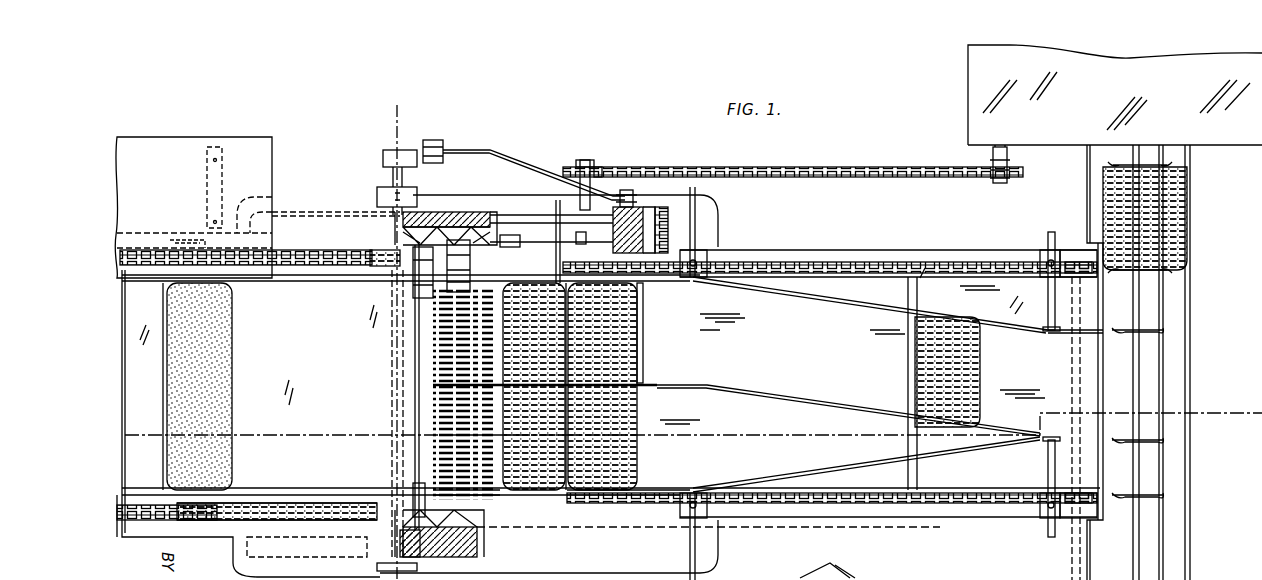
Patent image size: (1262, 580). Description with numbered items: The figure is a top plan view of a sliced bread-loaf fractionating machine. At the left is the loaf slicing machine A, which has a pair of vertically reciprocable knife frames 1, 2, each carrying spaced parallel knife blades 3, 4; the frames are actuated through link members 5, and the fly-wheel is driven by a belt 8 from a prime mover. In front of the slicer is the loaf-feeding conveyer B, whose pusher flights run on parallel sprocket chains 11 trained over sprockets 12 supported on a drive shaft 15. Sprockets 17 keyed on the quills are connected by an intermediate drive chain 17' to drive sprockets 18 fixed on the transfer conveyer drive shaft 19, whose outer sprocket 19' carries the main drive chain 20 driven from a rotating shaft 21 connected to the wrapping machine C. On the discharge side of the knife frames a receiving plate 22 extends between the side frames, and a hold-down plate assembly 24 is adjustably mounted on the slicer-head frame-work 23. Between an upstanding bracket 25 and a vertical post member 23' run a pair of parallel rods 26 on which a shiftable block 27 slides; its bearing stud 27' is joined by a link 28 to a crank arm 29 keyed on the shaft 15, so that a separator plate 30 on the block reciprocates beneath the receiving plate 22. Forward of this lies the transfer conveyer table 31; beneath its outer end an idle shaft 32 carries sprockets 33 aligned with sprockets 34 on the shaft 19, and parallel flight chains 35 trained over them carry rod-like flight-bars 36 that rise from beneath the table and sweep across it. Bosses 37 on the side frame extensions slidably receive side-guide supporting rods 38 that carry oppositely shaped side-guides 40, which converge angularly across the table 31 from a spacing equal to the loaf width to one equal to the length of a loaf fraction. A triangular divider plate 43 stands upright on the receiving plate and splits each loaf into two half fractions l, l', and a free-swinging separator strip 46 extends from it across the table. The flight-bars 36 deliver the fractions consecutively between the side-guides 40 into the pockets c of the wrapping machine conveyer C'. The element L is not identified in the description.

The knife frame 1 is at (395, 290).
The knife frame 2 is at (470, 266).
The knife blades 3 is at (433, 312).
The knife blades 4 is at (433, 334).
The link members 5 is at (1249, 421).
The belt 8 is at (390, 117).
The sprocket chains 11 is at (292, 286).
The sprockets 12 is at (377, 281).
The drive shaft 15 is at (405, 174).
The sprockets 17 is at (369, 250).
The intermediate drive chain 17' is at (507, 209).
The drive sprockets 18 is at (580, 238).
The transfer conveyer drive shaft 19 is at (582, 168).
The sprocket 19' is at (612, 160).
The main drive chain 20 is at (835, 168).
The rotating shaft 21 is at (1008, 156).
The receiving plate 22 is at (485, 480).
The slicer-head frame-work 23 is at (446, 365).
The vertical post member 23' is at (853, 563).
The hold-down plate assembly 24 is at (652, 206).
The upstanding bracket 25 is at (655, 235).
The parallel rods 26 is at (556, 215).
The shiftable block 27 is at (628, 230).
The bearing stud 27' is at (646, 170).
The link 28 is at (520, 152).
The crank arm 29 is at (422, 150).
The separator plate 30 is at (640, 322).
The transfer conveyer table 31 is at (818, 356).
The idle shaft 32 is at (1072, 366).
The sprockets 33 is at (1078, 260).
The sprockets 34 is at (600, 505).
The flight chains 35 is at (802, 262).
The flight-bars 36 is at (908, 356).
The bosses 37 is at (710, 262).
The side-guide supporting rods 38 is at (700, 226).
The side-guides 40 is at (830, 318).
The divider plate 43 is at (433, 388).
The separator strip 46 is at (890, 412).
The loaf slicing machine A is at (343, 203).
The loaf-feeding conveyer B is at (253, 463).
The wrapping machine C is at (1115, 95).
The wrapping machine conveyer mechanism C' is at (1161, 362).
The block L is at (230, 361).
The loaf fraction l is at (888, 326).
The loaf fraction l' is at (755, 376).
The pockets c is at (1170, 268).